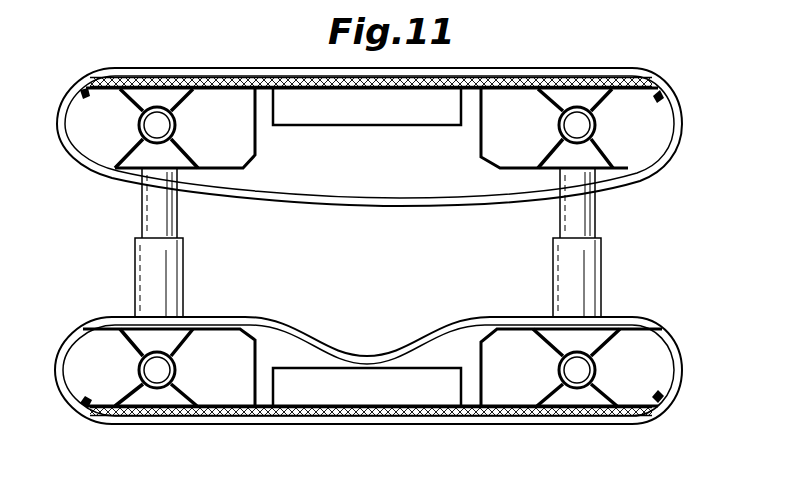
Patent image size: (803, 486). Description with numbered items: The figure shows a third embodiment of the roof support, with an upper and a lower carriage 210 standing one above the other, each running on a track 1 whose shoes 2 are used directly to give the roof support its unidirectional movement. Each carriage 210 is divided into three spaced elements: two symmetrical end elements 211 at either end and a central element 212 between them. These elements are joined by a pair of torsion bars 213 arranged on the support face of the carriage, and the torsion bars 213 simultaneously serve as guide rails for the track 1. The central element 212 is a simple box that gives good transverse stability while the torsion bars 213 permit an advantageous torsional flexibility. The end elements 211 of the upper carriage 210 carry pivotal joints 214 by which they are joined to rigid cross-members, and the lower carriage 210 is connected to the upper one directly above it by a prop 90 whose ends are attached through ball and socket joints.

The track 1 is at (668, 353).
The shoes 2 is at (437, 196).
The prop 90 is at (602, 261).
The carriage 210 is at (515, 103).
The end element 211 is at (215, 103).
The central element 212 is at (342, 112).
The torsion bars 213 is at (313, 84).
The pivotal joint 214 is at (585, 127).